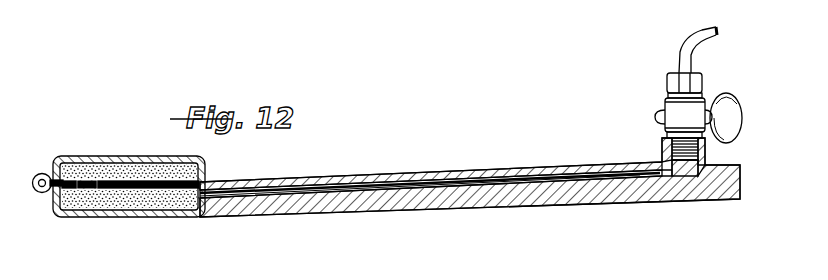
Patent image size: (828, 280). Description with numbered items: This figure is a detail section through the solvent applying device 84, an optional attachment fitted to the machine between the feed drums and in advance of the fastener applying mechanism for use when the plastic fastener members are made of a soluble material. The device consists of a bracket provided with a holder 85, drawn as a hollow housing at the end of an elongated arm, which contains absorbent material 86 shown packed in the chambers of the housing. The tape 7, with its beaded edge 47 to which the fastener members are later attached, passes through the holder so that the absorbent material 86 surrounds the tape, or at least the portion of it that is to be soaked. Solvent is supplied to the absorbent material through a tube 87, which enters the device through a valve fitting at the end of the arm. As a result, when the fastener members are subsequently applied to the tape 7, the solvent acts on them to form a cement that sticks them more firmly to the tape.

The solvent applying device 84 is at (275, 209).
The holder 85 is at (105, 158).
The beaded edge 47 is at (88, 158).
The tape 7 is at (186, 160).
The absorbent material 86 is at (120, 214).
The tube 87 is at (683, 44).